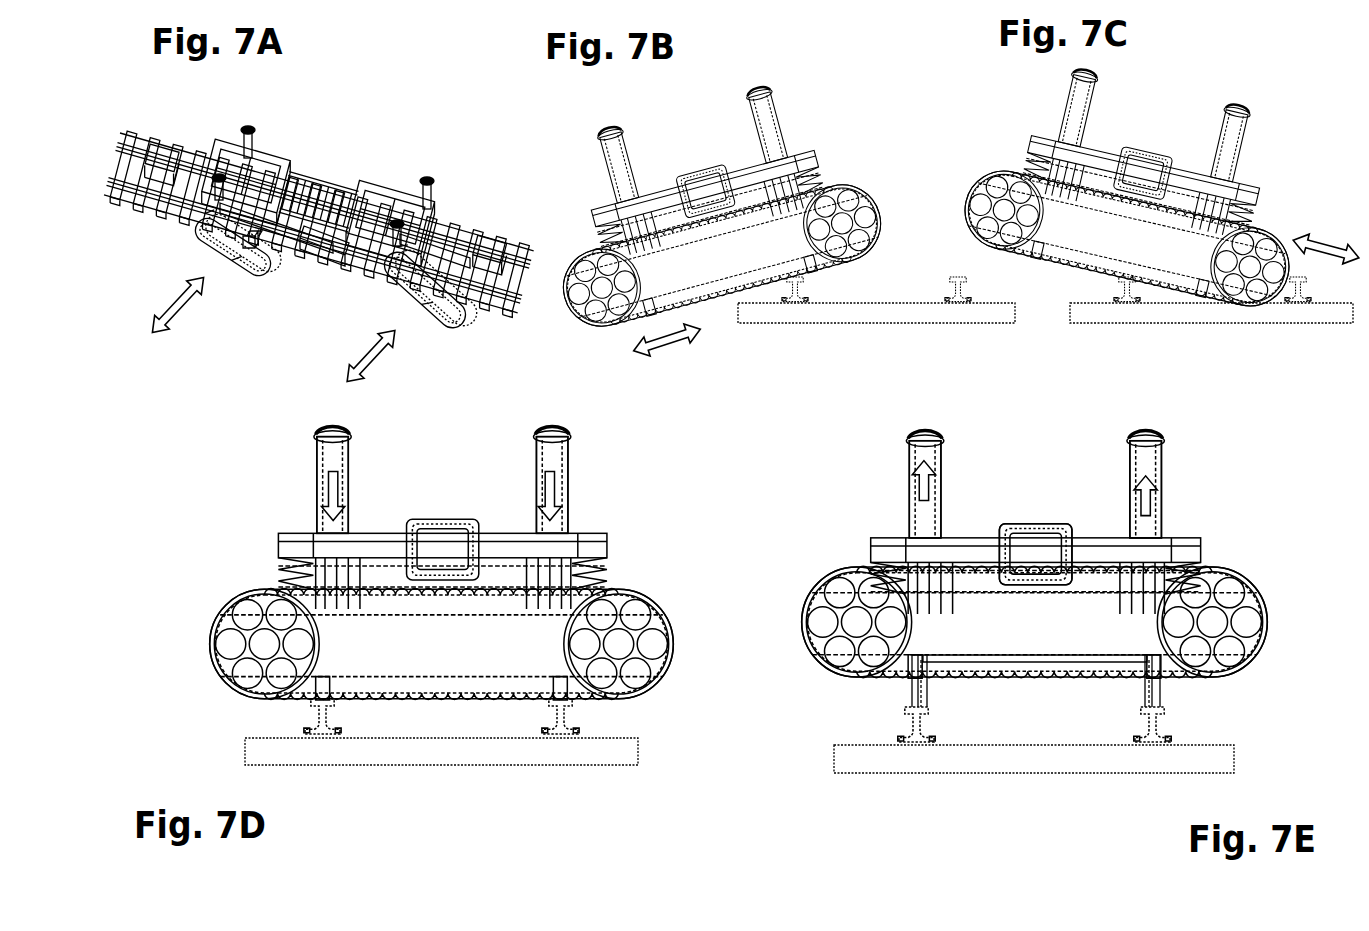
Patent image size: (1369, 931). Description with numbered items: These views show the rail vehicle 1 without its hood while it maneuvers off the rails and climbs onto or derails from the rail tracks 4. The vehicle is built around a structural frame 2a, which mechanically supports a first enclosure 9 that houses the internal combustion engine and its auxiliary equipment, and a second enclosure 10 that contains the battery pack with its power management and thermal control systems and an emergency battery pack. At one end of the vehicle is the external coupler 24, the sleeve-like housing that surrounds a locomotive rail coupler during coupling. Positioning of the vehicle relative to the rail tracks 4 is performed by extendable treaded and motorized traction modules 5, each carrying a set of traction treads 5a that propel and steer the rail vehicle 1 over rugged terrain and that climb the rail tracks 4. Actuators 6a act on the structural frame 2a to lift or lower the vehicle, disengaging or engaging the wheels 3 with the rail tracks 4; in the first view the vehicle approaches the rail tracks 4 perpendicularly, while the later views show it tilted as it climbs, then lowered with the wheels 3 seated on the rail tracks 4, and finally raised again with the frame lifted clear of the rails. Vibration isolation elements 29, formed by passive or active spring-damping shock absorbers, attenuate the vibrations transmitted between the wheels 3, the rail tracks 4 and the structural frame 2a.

In FIG. 7A, the rail vehicle 1 is at (367, 144).
In FIG. 7B, the rail vehicle 1 is at (835, 98).
In FIG. 7D, the rail vehicle 1 is at (176, 507).
In FIG. 7E, the rail vehicle 1 is at (1292, 549).
In FIG. 7A, the structural frame 2a is at (243, 193).
In FIG. 7D, the structural frame 2a is at (367, 538).
In FIG. 7E, the structural frame 2a is at (954, 552).
In FIG. 7E, the wheels 3 is at (1308, 690).
In FIG. 7A, the rail tracks 4 is at (503, 280).
In FIG. 7B, the rail tracks 4 is at (958, 307).
In FIG. 7C, the rail tracks 4 is at (1297, 287).
In FIG. 7D, the rail tracks 4 is at (561, 724).
In FIG. 7E, the rail tracks 4 is at (1260, 725).
In FIG. 7A, the extendable treaded and motorized traction modules 5 is at (427, 273).
In FIG. 7B, the traction treads 5a is at (873, 200).
In FIG. 7C, the traction treads 5a is at (965, 195).
In FIG. 7D, the traction treads 5a is at (409, 699).
In FIG. 7E, the traction treads 5a is at (1006, 676).
In FIG. 7A, the actuators 6a is at (247, 135).
In FIG. 7D, the actuators 6a is at (545, 449).
In FIG. 7E, the actuators 6a is at (1136, 468).
In FIG. 7A, the first enclosure 9 is at (327, 192).
In FIG. 7A, the second enclosure 10 is at (313, 253).
In FIG. 7A, the external coupler 24 is at (497, 247).
In FIG. 7E, the external coupler 24 is at (1058, 584).
In FIG. 7A, the vibration isolation elements 29 is at (250, 243).